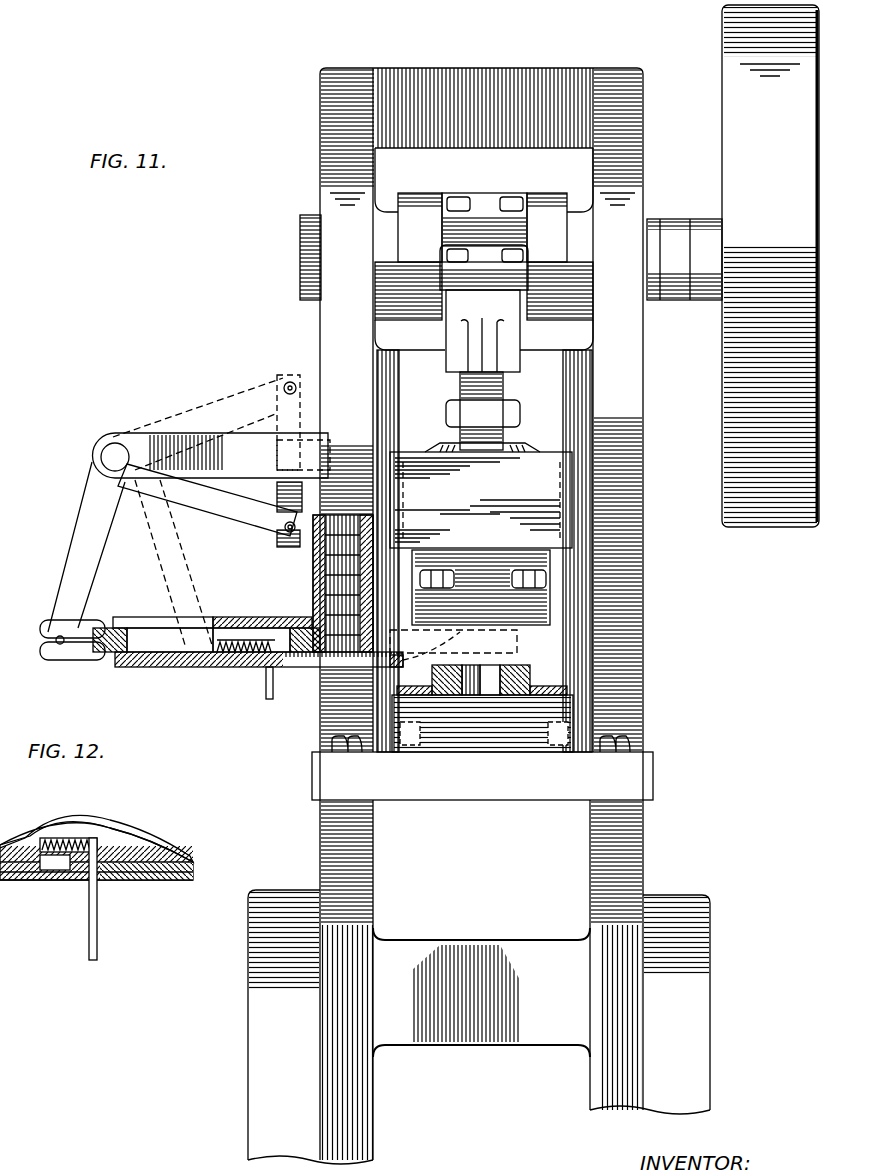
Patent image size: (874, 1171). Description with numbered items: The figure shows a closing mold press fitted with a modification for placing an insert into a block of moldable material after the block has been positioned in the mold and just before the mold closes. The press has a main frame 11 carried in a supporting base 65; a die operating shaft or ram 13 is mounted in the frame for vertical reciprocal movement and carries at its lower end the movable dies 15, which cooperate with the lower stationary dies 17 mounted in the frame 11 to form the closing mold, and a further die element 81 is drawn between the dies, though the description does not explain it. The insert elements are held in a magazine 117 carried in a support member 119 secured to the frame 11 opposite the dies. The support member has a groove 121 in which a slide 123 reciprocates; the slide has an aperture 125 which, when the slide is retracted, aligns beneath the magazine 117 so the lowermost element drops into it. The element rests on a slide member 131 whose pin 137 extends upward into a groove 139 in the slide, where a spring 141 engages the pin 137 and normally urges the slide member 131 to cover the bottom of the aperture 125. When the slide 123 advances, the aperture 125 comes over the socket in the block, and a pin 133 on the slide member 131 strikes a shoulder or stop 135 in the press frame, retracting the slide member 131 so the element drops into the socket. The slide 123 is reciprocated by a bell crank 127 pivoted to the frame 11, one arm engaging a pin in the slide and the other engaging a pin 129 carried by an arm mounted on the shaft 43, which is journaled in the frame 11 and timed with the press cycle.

In FIG. 11, the main frame 11 is at (337, 348).
In FIG. 11, the die operating shaft 13 is at (555, 517).
In FIG. 11, the movable dies 15 is at (535, 606).
In FIG. 11, the lower stationary dies 17 is at (560, 709).
In FIG. 11, the shaft 43 is at (345, 445).
In FIG. 11, the supporting base 65 is at (373, 985).
In FIG. 11, the die 81 is at (490, 683).
In FIG. 11, the magazine 117 is at (316, 562).
In FIG. 11, the support member 119 is at (281, 618).
In FIG. 11, the groove 121 is at (230, 617).
In FIG. 11, the slide 123 is at (150, 640).
In FIG. 11, the aperture 125 is at (525, 668).
In FIG. 11, the bell crank 127 is at (95, 525).
In FIG. 11, the pin 129 is at (265, 530).
In FIG. 11, the slide member 131 is at (312, 668).
In FIG. 12, the slide member 131 is at (170, 866).
In FIG. 11, the pin 133 is at (266, 683).
In FIG. 11, the stop 135 is at (395, 696).
In FIG. 12, the pin 137 is at (122, 832).
In FIG. 11, the groove 139 is at (453, 641).
In FIG. 12, the groove 139 is at (82, 840).
In FIG. 12, the spring 141 is at (55, 857).